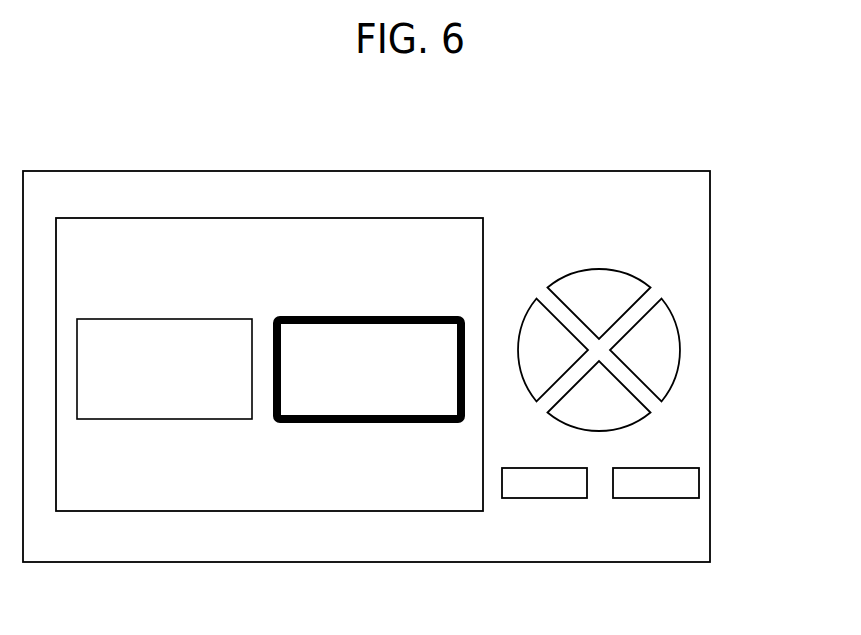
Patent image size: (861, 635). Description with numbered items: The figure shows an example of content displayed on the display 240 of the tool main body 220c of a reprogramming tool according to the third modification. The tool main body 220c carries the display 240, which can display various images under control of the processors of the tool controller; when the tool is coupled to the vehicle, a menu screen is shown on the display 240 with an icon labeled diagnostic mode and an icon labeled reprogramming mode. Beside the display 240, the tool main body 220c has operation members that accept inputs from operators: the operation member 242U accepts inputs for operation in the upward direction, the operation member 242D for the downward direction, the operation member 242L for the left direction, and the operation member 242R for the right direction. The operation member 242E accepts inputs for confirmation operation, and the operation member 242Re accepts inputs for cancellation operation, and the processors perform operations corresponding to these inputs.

The tool main body 220c is at (287, 171).
The display 240 is at (278, 511).
The operation member 242U is at (642, 276).
The operation member 242R is at (680, 338).
The operation member 242D is at (647, 420).
The operation member 242L is at (524, 318).
The operation member 242E is at (550, 498).
The operation member 242Re is at (658, 498).